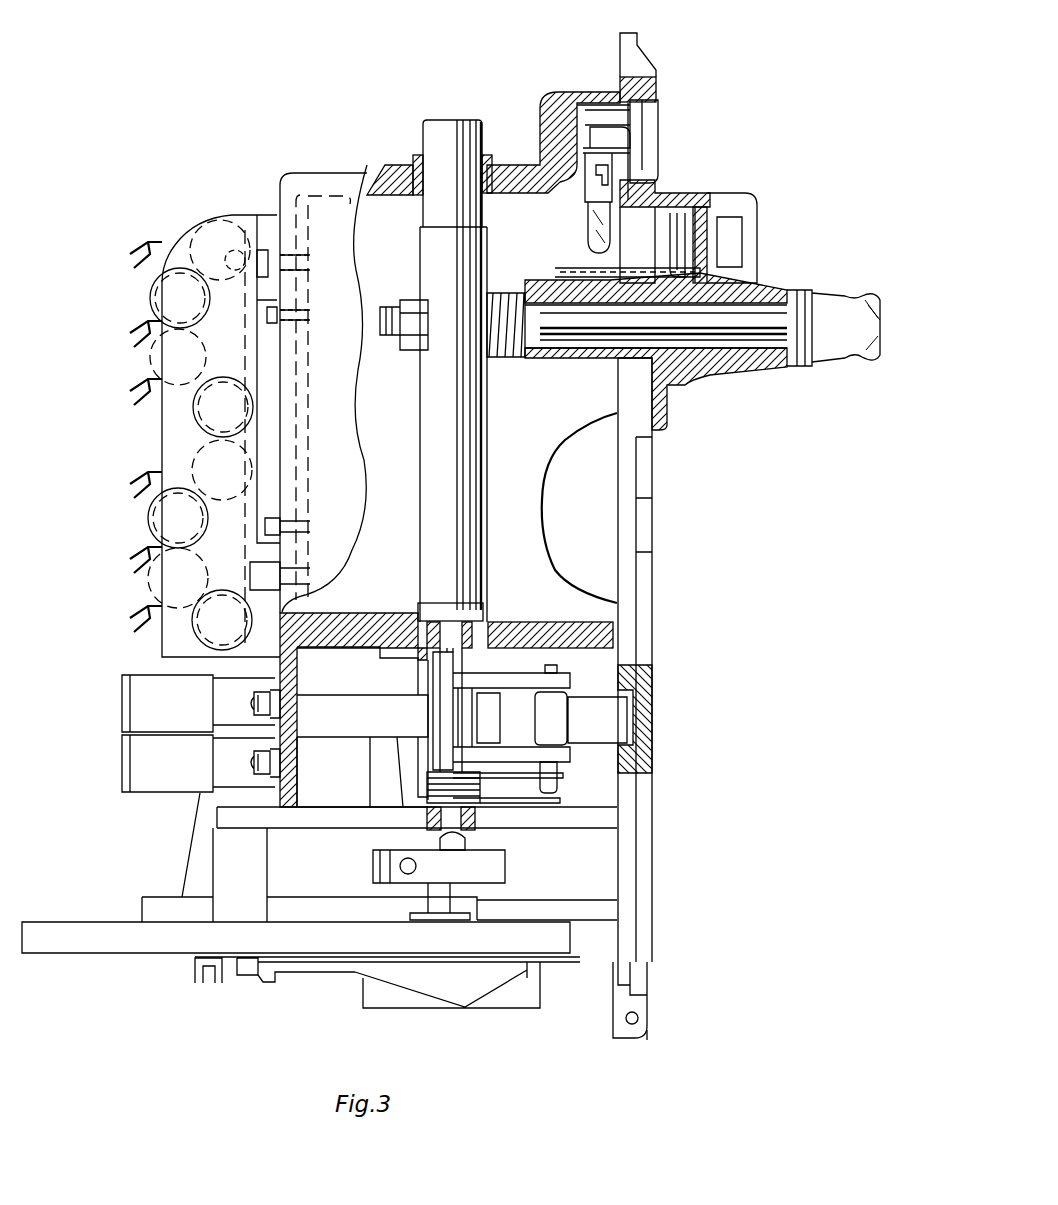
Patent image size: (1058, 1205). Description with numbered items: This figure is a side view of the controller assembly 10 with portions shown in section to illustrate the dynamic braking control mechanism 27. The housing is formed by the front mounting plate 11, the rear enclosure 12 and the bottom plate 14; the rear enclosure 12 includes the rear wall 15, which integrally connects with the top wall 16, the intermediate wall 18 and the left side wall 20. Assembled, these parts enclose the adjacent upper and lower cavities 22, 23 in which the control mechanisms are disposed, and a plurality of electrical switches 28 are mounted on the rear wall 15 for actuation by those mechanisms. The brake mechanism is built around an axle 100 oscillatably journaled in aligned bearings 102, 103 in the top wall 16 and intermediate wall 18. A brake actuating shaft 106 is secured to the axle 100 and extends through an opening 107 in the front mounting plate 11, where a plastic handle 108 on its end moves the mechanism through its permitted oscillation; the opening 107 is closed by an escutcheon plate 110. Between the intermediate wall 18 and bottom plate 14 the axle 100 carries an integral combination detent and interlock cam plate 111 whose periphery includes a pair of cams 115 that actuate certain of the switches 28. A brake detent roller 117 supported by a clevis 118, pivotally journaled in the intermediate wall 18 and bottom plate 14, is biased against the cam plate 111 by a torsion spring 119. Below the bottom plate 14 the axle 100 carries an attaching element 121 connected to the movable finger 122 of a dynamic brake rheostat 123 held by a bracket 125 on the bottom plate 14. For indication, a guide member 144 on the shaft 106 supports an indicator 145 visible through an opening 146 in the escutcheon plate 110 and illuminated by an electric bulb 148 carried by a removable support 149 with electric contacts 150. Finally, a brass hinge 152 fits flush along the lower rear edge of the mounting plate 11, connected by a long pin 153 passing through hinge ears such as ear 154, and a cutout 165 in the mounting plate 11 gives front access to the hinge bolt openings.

The controller assembly 10 is at (672, 50).
The front mounting plate 11 is at (640, 908).
The rear enclosure 12 is at (283, 178).
The bottom plate 14 is at (337, 822).
The rear wall 15 is at (290, 230).
The top wall 16 is at (368, 165).
The intermediate wall 18 is at (364, 613).
The left side wall 20 is at (350, 504).
The upper cavity 22 is at (607, 610).
The lower cavity 23 is at (597, 664).
The dynamic braking control mechanism 27 is at (500, 506).
The electrical switches 28 is at (125, 748).
The axle 100 is at (470, 418).
The bearing 102 is at (492, 160).
The bearing 103 is at (503, 618).
The brake actuating shaft 106 is at (545, 290).
The opening 107 is at (648, 218).
The plastic handle 108 is at (832, 295).
The escutcheon plate 110 is at (757, 300).
The combination detent and interlock cam plate 111 is at (358, 695).
The cams 115 is at (320, 740).
The brake detent roller 117 is at (565, 720).
The clevis 118 is at (530, 672).
The torsion spring 119 is at (470, 755).
The attaching element 121 is at (505, 865).
The movable finger 122 is at (318, 972).
The dynamic brake rheostat 123 is at (222, 985).
The bracket 125 is at (235, 862).
The guide member 144 is at (565, 348).
The indicator 145 is at (700, 230).
The opening 146 is at (722, 240).
The electric bulb 148 is at (590, 225).
The removable support 149 is at (648, 125).
The electric contacts 150 is at (600, 135).
The brass hinge 152 is at (615, 1005).
The long pin 153 is at (640, 1018).
The ear 154 is at (640, 1045).
The cutout 165 is at (648, 1002).